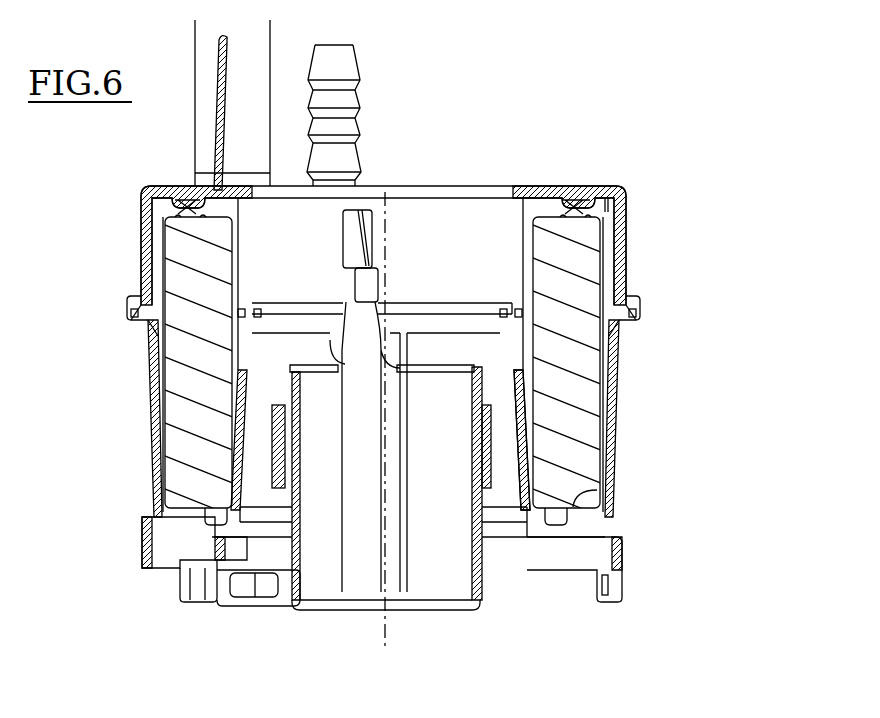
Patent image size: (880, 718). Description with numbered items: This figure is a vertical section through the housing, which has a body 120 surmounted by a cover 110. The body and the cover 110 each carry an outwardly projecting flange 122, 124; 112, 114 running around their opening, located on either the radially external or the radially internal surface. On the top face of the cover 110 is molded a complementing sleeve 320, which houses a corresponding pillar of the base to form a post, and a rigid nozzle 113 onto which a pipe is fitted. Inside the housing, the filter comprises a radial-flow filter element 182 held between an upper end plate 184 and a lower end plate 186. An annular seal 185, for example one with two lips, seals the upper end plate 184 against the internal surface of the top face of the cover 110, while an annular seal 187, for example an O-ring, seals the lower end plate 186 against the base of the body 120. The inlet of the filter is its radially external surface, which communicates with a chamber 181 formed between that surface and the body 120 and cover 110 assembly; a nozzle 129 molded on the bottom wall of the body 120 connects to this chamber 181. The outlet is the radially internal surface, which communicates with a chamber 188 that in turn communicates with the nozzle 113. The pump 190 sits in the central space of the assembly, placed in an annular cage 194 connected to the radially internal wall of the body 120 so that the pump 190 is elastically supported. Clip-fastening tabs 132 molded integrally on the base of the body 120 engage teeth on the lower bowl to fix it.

The cover 110 is at (625, 245).
The flange of the cover 112 is at (630, 303).
The rigid nozzle 113 is at (343, 63).
The flange of the cover 114 is at (510, 303).
The body 120 is at (615, 418).
The flange of the body 122 is at (635, 340).
The flange of the body 124 is at (527, 370).
The nozzle 129 is at (175, 585).
The clip-fastening tabs 132 is at (238, 603).
The chamber 181 is at (607, 362).
The radial-flow filter element 182 is at (578, 272).
The upper end plate 184 is at (613, 200).
The annular seal 185 is at (577, 193).
The lower end plate 186 is at (600, 493).
The annular seal 187 is at (522, 538).
The chamber 188 is at (530, 445).
The pump 190 is at (320, 573).
The annular cage 194 is at (494, 543).
The sleeve 320 is at (205, 122).